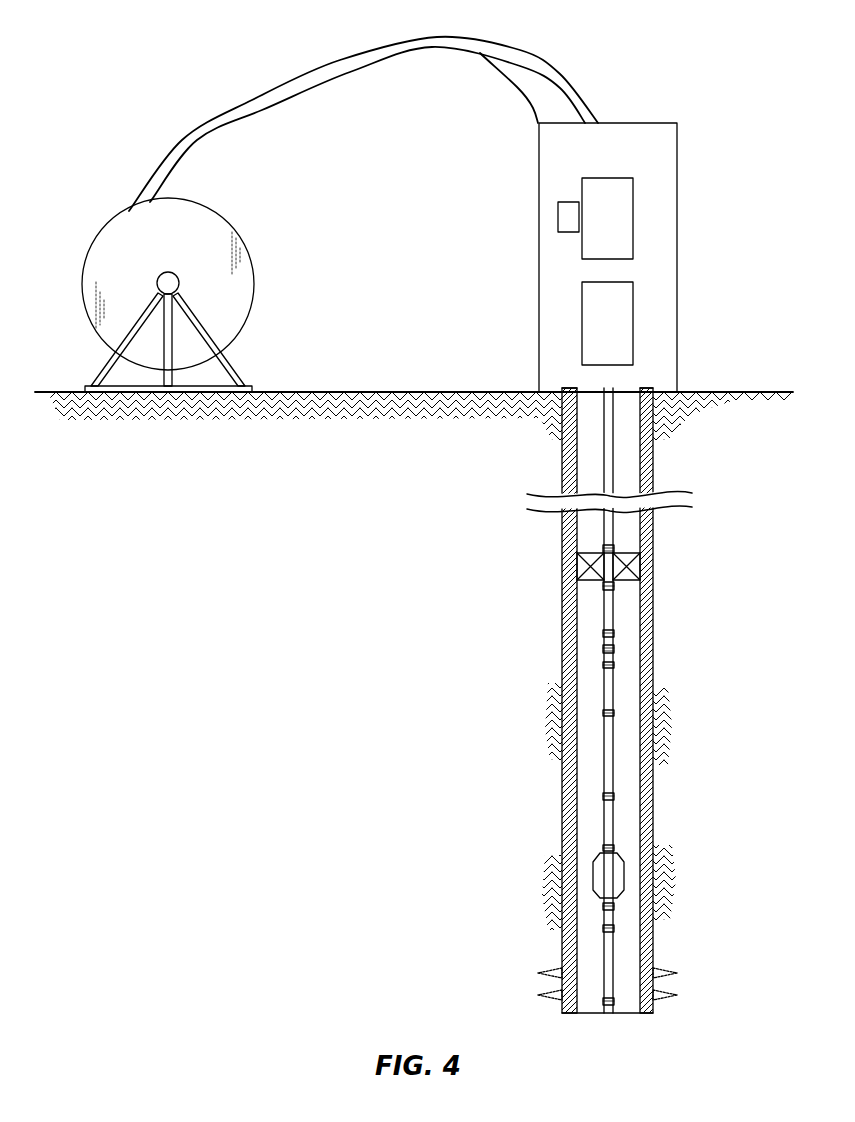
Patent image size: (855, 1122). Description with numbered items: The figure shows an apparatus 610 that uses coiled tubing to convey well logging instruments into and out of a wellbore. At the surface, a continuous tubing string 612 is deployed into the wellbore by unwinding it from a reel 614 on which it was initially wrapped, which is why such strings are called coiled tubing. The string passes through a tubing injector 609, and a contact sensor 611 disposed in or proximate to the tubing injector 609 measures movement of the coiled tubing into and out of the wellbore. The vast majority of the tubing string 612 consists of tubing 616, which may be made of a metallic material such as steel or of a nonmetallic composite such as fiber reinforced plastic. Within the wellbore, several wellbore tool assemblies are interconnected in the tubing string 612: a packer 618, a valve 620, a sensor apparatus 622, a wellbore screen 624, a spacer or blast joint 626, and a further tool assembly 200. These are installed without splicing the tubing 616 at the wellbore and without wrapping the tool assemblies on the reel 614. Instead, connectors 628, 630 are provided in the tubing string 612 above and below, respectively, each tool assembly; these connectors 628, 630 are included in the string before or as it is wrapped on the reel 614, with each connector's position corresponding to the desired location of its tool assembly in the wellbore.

The tool assembly 200 is at (614, 928).
The tubing injector 609 is at (678, 197).
The apparatus 610 is at (653, 33).
The contact sensor 611 is at (557, 222).
The continuous tubing string 612 is at (618, 478).
The reel 614 is at (253, 296).
The tubing 616 is at (257, 103).
The packer 618 is at (583, 548).
The valve 620 is at (604, 649).
The sensor apparatus 622 is at (604, 748).
The wellbore screen 624 is at (593, 885).
The spacer or blast joint 626 is at (603, 980).
The connector 628 is at (614, 549).
The connector 630 is at (614, 586).